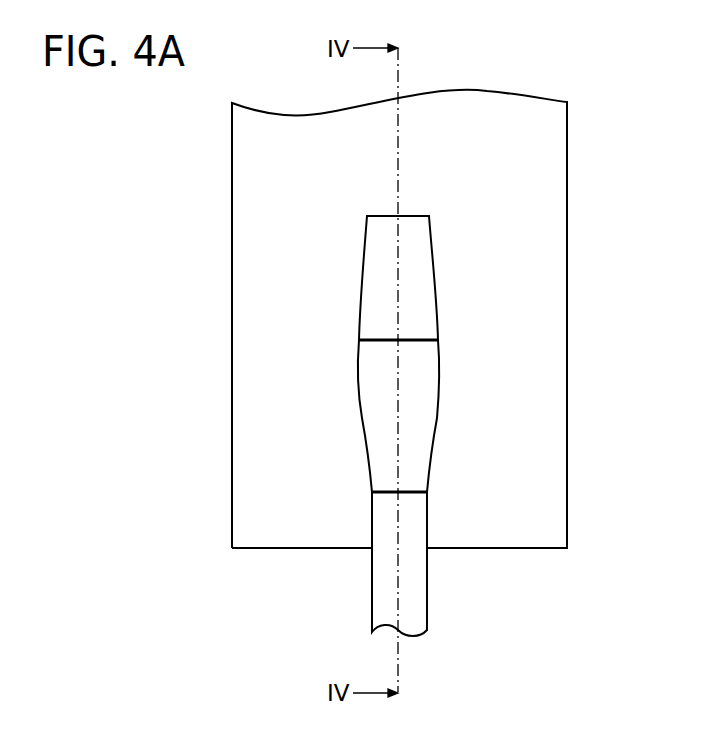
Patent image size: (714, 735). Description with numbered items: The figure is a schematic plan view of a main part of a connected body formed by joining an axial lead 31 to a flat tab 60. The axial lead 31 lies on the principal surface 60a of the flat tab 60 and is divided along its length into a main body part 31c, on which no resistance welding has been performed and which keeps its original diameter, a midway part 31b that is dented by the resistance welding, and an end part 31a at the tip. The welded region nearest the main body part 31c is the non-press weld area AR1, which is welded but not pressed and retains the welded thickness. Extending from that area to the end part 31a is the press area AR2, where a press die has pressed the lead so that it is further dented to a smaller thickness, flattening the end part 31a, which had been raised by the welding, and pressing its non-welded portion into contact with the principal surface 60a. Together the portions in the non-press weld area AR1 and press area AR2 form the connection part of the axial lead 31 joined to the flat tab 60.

The flat tab 60 is at (232, 193).
The principal surface of the flat tab 60a is at (260, 257).
The axial lead 31 is at (413, 327).
The end part of the axial lead 31a is at (413, 213).
The midway part of the axial lead 31b is at (422, 375).
The main body part of the axial lead 31c is at (418, 573).
The non-press weld area AR1 is at (418, 418).
The press area AR2 is at (420, 293).